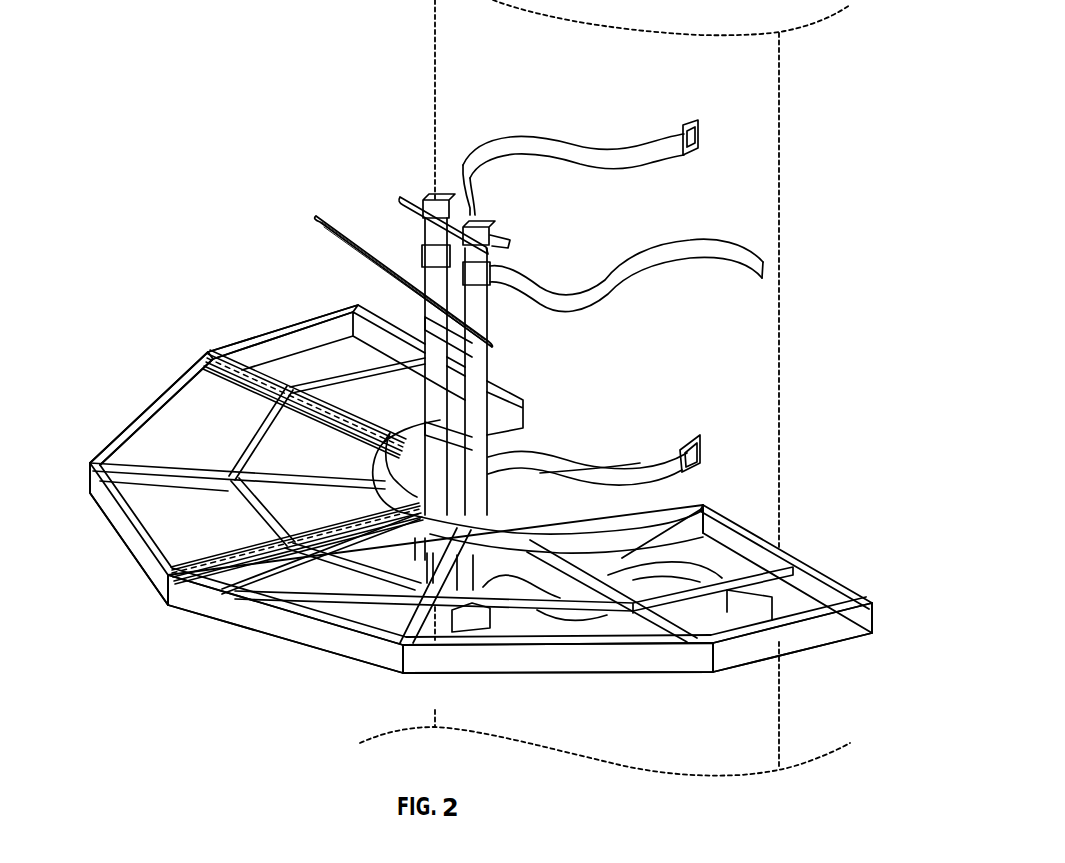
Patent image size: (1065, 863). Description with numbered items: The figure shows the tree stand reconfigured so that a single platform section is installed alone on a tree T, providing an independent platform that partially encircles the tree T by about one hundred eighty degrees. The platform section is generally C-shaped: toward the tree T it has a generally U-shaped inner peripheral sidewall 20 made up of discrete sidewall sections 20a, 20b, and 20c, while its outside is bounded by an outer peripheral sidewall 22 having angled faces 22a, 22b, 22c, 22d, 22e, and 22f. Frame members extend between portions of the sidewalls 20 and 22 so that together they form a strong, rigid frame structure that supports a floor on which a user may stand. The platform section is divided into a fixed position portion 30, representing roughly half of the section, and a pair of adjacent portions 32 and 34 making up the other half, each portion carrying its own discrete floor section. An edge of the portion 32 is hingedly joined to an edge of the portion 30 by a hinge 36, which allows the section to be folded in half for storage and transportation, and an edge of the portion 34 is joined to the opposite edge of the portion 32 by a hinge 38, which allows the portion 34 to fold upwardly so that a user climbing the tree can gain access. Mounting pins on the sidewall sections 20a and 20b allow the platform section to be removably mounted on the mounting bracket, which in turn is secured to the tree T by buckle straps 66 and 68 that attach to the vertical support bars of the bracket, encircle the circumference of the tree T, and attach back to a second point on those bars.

The tree T is at (433, 77).
The inner peripheral sidewall 20 is at (553, 418).
The sidewall section 20a is at (690, 508).
The sidewall section 20b is at (407, 433).
The sidewall section 20c is at (512, 412).
The outer peripheral sidewall 22 is at (459, 499).
The angled face 22a is at (808, 640).
The angled face 22b is at (588, 660).
The angled face 22c is at (347, 657).
The angled face 22d is at (133, 563).
The angled face 22e is at (152, 397).
The angled face 22f is at (295, 340).
The fixed position portion 30 is at (817, 588).
The adjacent portion 32 is at (128, 453).
The adjacent portion 34 is at (315, 313).
The hinge 36 is at (205, 575).
The hinge 38 is at (223, 343).
The buckle strap 66 is at (607, 150).
The buckle strap 68 is at (657, 457).